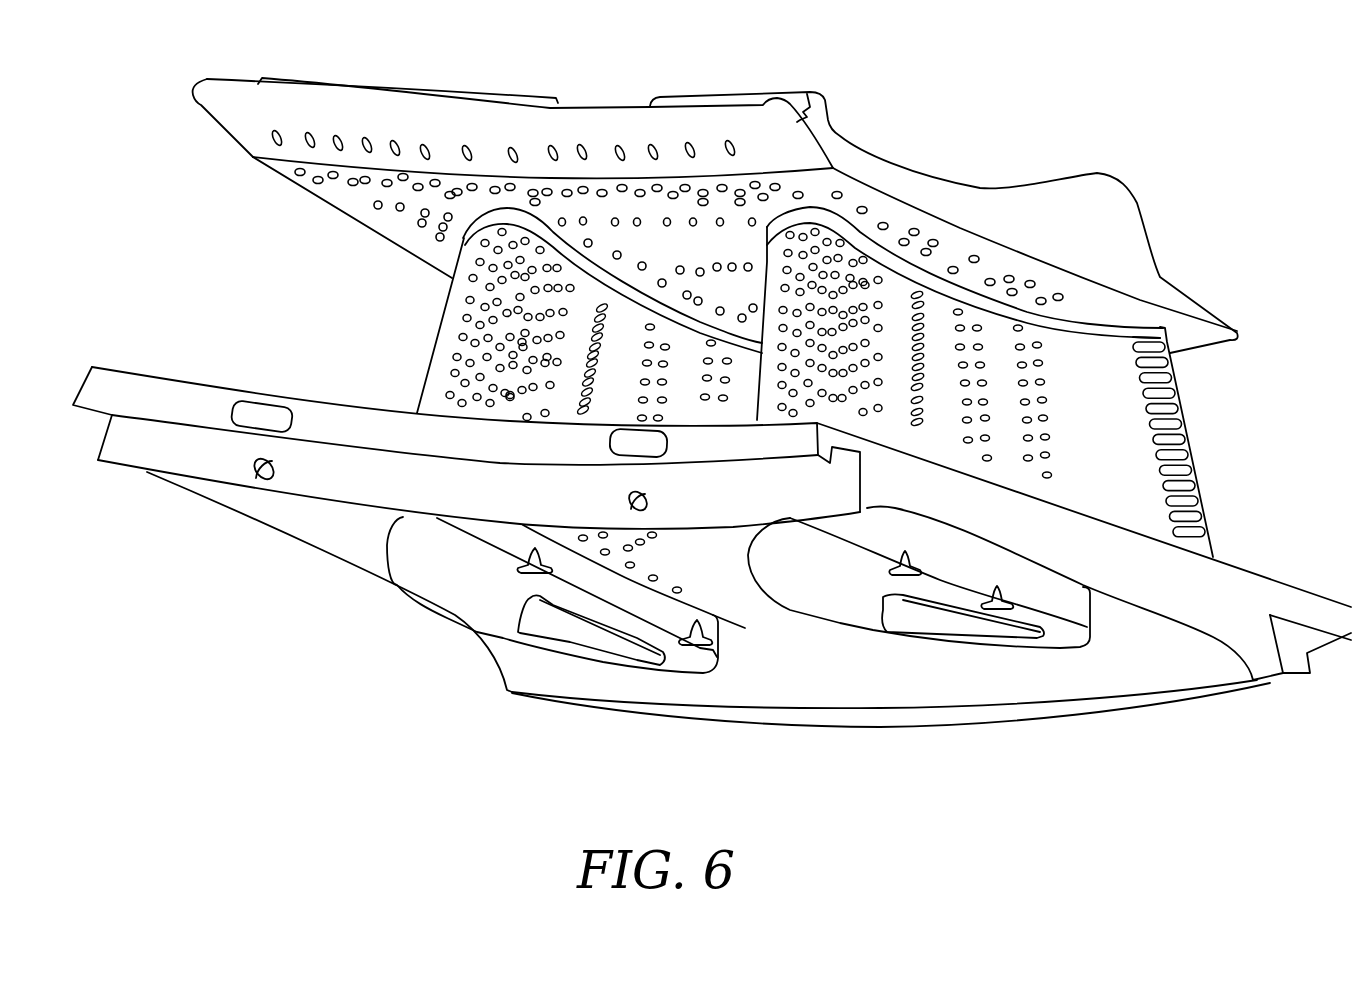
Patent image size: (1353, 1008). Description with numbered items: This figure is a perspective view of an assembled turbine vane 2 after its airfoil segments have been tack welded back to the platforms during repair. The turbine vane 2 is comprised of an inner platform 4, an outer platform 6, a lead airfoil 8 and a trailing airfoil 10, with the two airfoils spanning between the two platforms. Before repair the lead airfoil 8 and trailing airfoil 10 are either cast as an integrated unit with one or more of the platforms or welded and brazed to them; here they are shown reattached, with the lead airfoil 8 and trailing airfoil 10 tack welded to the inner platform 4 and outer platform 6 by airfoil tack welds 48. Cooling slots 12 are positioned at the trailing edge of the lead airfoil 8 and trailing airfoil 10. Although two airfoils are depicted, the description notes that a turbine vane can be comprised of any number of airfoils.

The turbine vane 2 is at (186, 47).
The inner platform 4 is at (705, 122).
The outer platform 6 is at (313, 517).
The lead airfoil 8 is at (629, 379).
The trailing airfoil 10 is at (1114, 424).
The cooling slots 12 is at (1181, 428).
The airfoil tack welds 48 is at (520, 558).